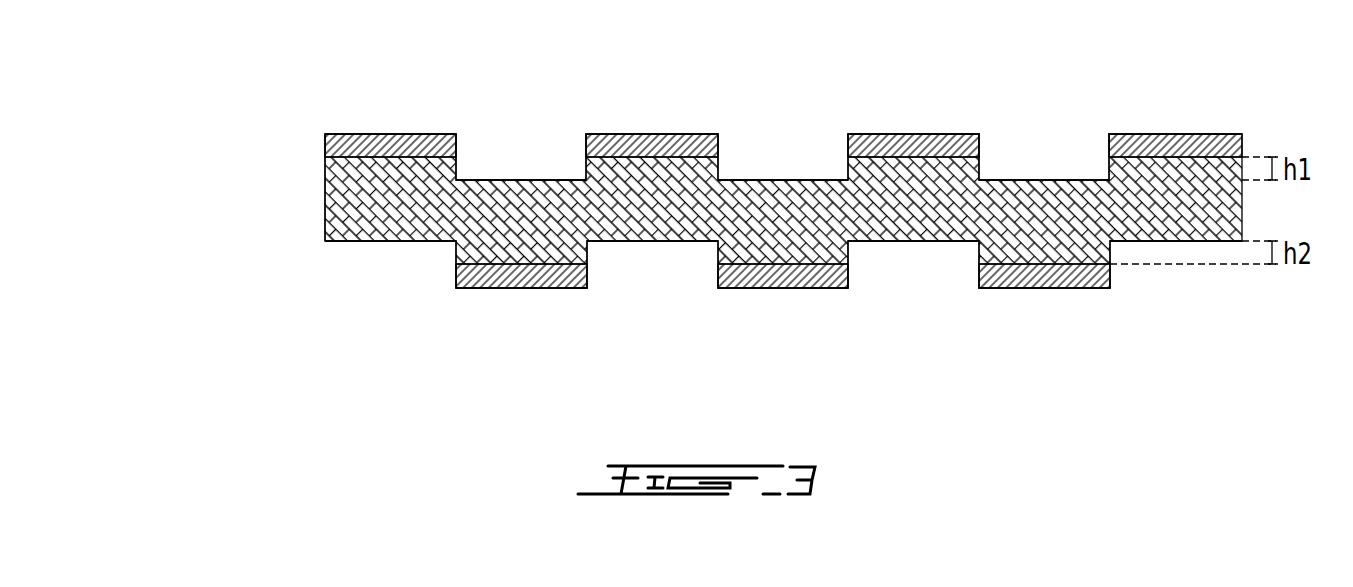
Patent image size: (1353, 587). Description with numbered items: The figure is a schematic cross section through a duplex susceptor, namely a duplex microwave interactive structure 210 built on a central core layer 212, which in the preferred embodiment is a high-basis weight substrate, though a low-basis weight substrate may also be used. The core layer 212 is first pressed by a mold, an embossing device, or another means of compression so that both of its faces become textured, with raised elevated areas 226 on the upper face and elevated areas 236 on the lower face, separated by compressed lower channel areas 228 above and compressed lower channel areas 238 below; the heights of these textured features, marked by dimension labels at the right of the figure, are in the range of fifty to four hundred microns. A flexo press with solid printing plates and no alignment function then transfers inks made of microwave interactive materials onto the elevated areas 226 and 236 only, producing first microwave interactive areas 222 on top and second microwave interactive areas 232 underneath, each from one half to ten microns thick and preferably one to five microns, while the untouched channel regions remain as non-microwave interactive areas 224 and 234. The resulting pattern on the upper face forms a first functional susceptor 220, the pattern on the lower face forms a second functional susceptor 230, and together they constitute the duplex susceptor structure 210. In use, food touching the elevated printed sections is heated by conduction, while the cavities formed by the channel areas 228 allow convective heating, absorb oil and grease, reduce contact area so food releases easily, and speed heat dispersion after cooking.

The duplex microwave interactive structure 210 is at (286, 211).
The central core layer 212 is at (325, 230).
The first functional susceptor 220 is at (222, 148).
The first microwave interactive areas 222 is at (388, 134).
The first non-microwave interactive areas 224 is at (493, 180).
The elevated areas 226 is at (325, 158).
The compressed lower channel areas 228 is at (545, 167).
The second functional susceptor 230 is at (442, 290).
The second microwave interactive areas 232 is at (522, 288).
The second non-microwave interactive areas 234 is at (375, 243).
The elevated areas 236 is at (743, 255).
The compressed lower channel areas 238 is at (617, 252).